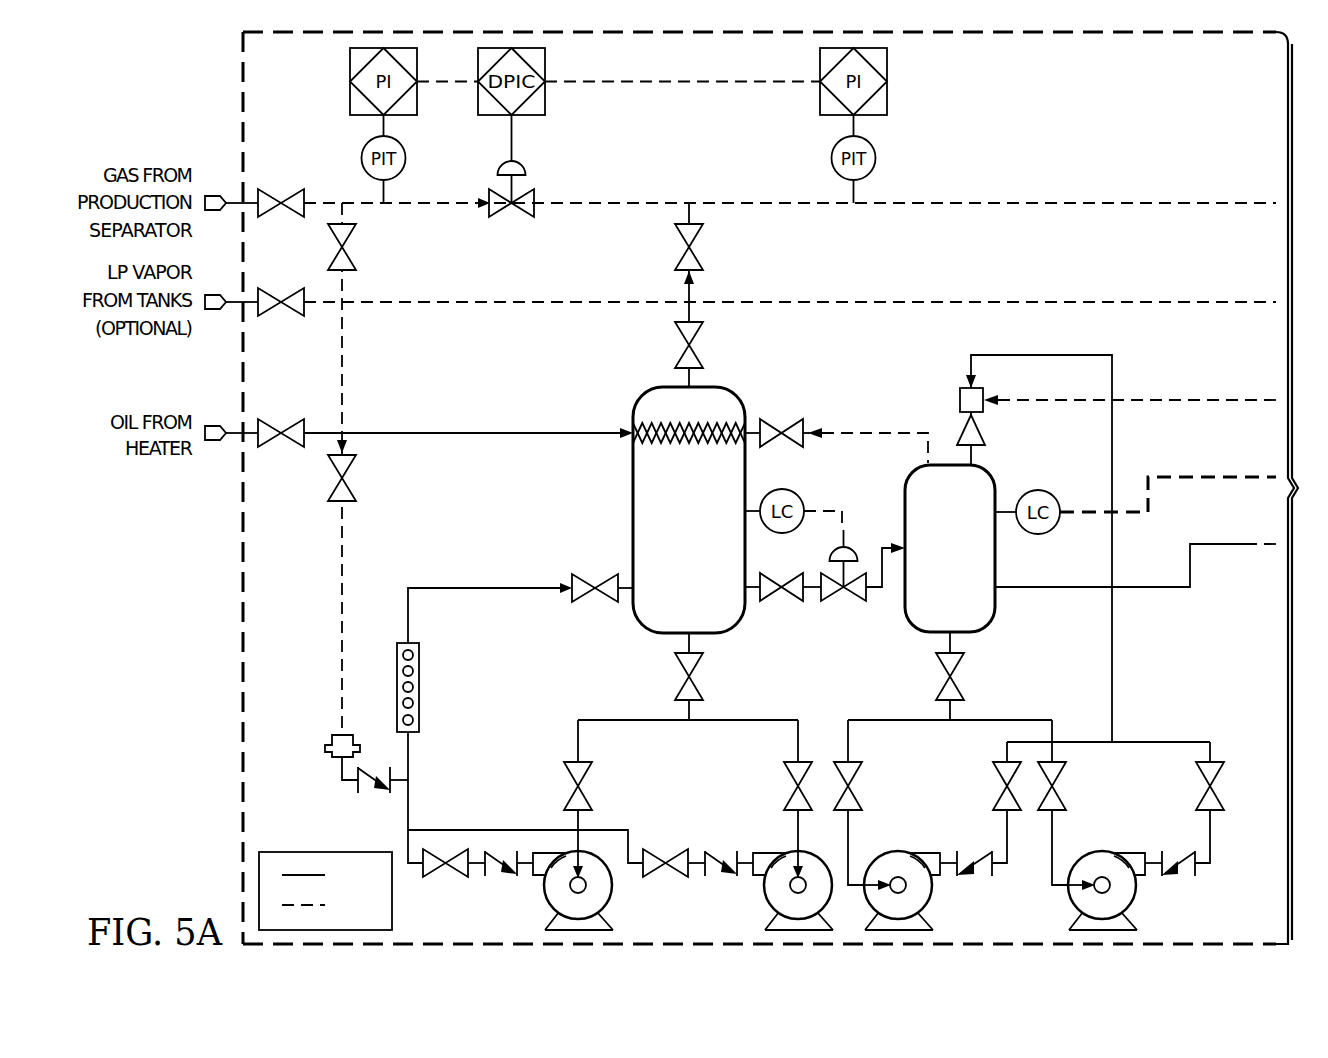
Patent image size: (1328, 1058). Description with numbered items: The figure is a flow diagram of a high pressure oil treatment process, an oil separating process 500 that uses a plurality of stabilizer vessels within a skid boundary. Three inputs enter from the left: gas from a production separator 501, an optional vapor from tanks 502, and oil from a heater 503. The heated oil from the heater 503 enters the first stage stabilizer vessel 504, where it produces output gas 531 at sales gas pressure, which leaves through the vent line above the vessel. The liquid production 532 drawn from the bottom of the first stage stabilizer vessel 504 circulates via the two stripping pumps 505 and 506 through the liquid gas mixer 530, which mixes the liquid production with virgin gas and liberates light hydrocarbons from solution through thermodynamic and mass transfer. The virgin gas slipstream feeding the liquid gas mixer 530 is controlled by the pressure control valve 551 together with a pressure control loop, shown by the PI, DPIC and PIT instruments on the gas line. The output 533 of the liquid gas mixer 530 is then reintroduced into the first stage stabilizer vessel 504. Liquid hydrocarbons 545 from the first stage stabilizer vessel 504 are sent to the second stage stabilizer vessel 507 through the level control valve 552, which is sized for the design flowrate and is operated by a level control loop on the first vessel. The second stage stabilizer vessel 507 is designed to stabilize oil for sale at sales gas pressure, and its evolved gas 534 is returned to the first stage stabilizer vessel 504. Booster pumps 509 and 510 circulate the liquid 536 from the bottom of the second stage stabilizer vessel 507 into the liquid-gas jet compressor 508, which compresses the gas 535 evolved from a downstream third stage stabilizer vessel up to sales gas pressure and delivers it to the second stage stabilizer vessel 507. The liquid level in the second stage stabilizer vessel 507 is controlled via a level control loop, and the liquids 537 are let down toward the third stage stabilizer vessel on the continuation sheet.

The oil separating process 500 is at (184, 772).
The gas from a production separator 501 is at (227, 196).
The vapor from tanks 502 is at (227, 308).
The oil from a heater 503 is at (227, 440).
The first stage stabilizer vessel 504 is at (667, 636).
The stripping pump 505 is at (545, 882).
The stripping pump 506 is at (765, 882).
The second stage stabilizer vessel 507 is at (920, 634).
The liquid-gas jet compressor 508 is at (958, 393).
The booster pump 509 is at (932, 886).
The booster pump 510 is at (1136, 886).
The liquid gas mixer 530 is at (422, 689).
The output gas 531 is at (686, 284).
The liquid production 532 is at (693, 650).
The output of the liquid gas mixer 533 is at (490, 586).
The evolved gas 534 is at (872, 440).
The gas evolved 535 is at (1170, 398).
The liquid 536 is at (962, 650).
The liquids 537 is at (1048, 590).
The liquid hydrocarbons 545 is at (872, 592).
The pressure control valve 551 is at (507, 215).
The level control valve 552 is at (838, 598).